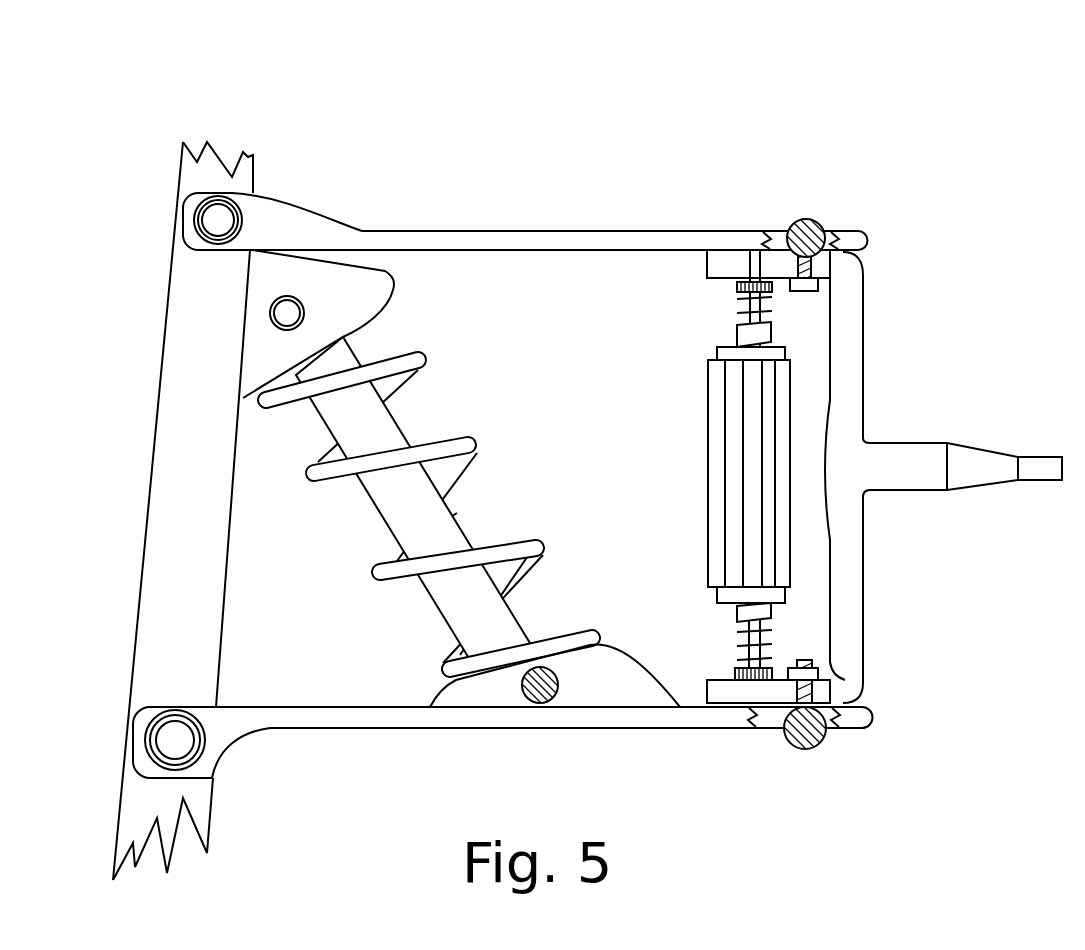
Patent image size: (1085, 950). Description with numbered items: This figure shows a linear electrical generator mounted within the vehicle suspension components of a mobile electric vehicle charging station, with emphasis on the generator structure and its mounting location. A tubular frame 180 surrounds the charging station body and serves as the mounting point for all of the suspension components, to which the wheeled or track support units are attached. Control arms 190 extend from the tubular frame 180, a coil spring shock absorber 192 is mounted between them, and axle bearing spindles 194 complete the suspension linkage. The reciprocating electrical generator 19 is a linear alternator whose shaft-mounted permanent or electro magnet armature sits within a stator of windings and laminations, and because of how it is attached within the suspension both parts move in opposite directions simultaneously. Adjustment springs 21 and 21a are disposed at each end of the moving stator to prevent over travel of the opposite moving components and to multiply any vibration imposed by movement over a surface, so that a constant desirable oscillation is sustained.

The tubular frame 180 is at (255, 153).
The control arms 190 is at (358, 233).
The reciprocating electrical generator 19 is at (707, 360).
The axle bearing spindles 194 is at (722, 268).
The adjustment spring 21 is at (773, 323).
The adjustment spring 21a is at (737, 632).
The coil spring shock absorber 192 is at (453, 433).